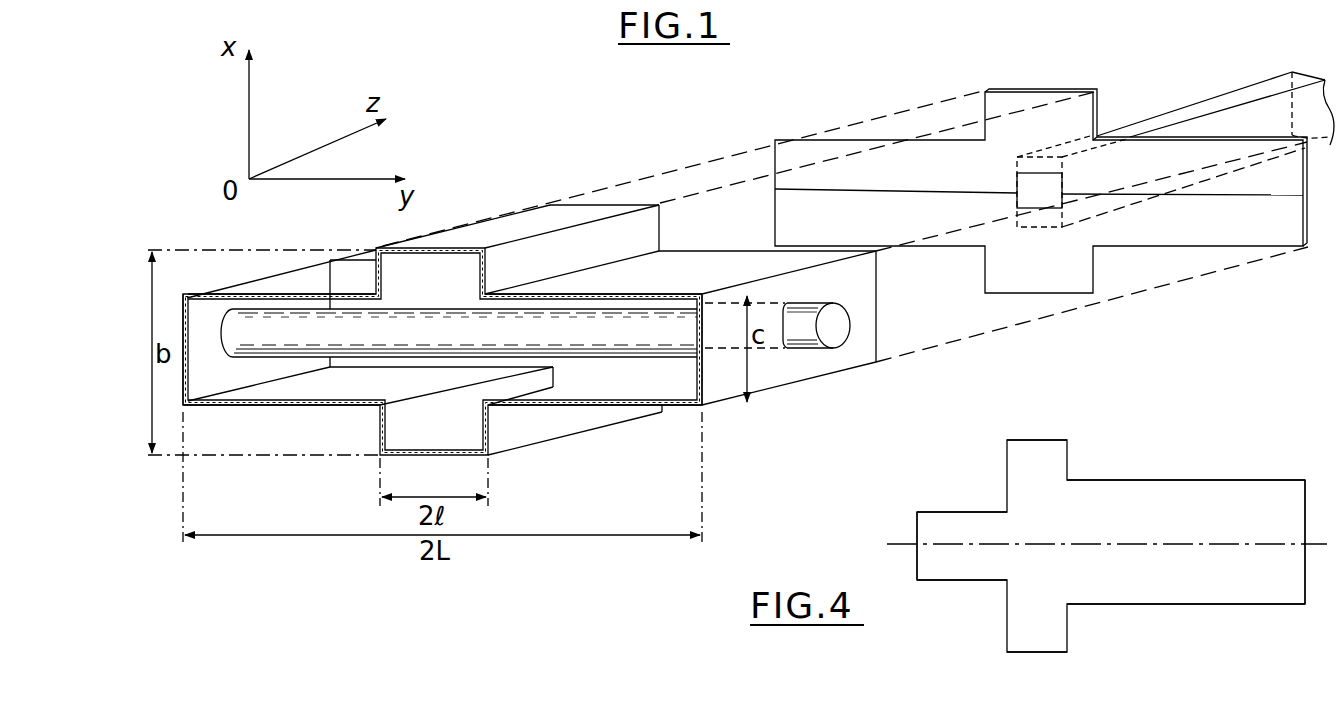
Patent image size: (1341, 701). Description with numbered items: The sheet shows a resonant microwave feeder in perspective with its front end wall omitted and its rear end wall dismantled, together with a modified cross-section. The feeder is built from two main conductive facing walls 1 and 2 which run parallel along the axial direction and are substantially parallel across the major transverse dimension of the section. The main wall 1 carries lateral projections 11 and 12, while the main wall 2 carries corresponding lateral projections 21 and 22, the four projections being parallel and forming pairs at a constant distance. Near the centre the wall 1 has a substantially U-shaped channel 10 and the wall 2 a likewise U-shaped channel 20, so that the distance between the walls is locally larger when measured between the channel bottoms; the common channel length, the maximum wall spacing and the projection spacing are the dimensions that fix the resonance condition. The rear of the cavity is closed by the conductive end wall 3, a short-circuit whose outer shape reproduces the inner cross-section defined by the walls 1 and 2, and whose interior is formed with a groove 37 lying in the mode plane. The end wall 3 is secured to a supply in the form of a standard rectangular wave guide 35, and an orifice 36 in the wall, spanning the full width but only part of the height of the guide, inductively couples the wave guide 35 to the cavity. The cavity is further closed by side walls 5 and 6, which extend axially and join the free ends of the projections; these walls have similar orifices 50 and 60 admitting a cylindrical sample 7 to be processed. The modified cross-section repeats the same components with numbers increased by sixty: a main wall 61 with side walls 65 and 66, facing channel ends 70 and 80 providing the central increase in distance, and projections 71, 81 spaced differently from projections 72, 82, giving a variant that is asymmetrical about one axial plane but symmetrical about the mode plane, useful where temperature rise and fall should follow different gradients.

In FIG. 1, the main conductive facing wall 1 is at (458, 208).
In FIG. 1, the main conductive facing wall 2 is at (513, 459).
In FIG. 1, the conductive end wall 3 is at (1003, 103).
In FIG. 1, the side wall 5 is at (770, 373).
In FIG. 1, the side wall 6 is at (210, 338).
In FIG. 1, the cylindrical sample 7 is at (844, 323).
In FIG. 1, the U-shaped channel 10 is at (533, 222).
In FIG. 1, the lateral projection 11 is at (285, 283).
In FIG. 1, the lateral projection 12 is at (695, 268).
In FIG. 1, the U-shaped channel 20 is at (410, 450).
In FIG. 1, the lateral projection 21 is at (275, 410).
In FIG. 1, the lateral projection 22 is at (685, 406).
In FIG. 1, the supply wave guide 35 is at (1185, 114).
In FIG. 1, the coupling orifice 36 is at (1035, 178).
In FIG. 1, the groove 37 is at (1250, 197).
In FIG. 1, the orifice 50 is at (797, 351).
In FIG. 1, the orifice 60 is at (237, 356).
In FIG. 4, the main conductive facing wall 61 is at (1085, 452).
In FIG. 4, the side wall 65 is at (1305, 590).
In FIG. 4, the side wall 66 is at (915, 535).
In FIG. 4, the end of U-shaped channel 70 is at (1008, 440).
In FIG. 4, the projection 71 is at (960, 512).
In FIG. 4, the projection 72 is at (1218, 480).
In FIG. 4, the end of U-shaped channel 80 is at (1035, 652).
In FIG. 4, the projection 81 is at (975, 580).
In FIG. 4, the projection 82 is at (1187, 604).